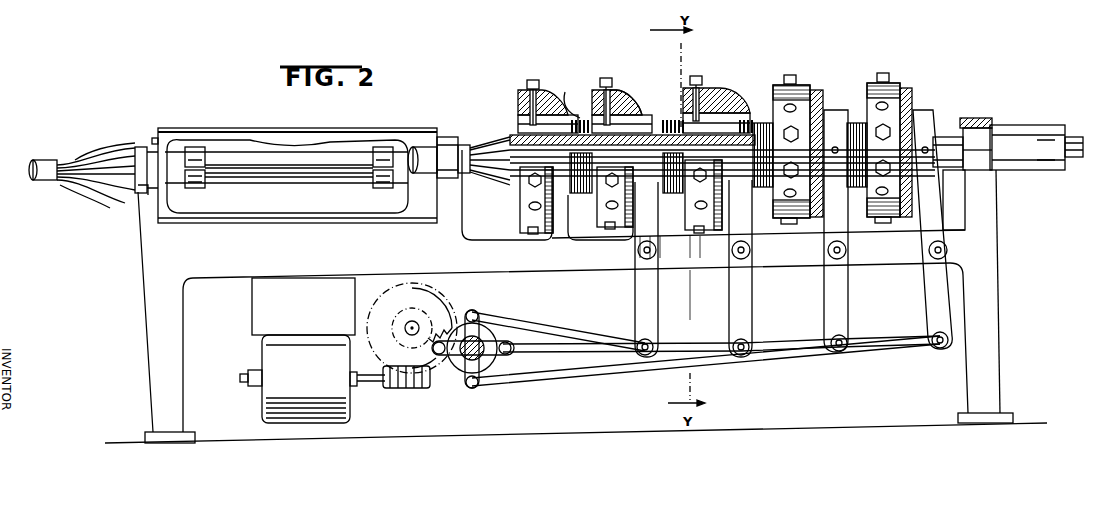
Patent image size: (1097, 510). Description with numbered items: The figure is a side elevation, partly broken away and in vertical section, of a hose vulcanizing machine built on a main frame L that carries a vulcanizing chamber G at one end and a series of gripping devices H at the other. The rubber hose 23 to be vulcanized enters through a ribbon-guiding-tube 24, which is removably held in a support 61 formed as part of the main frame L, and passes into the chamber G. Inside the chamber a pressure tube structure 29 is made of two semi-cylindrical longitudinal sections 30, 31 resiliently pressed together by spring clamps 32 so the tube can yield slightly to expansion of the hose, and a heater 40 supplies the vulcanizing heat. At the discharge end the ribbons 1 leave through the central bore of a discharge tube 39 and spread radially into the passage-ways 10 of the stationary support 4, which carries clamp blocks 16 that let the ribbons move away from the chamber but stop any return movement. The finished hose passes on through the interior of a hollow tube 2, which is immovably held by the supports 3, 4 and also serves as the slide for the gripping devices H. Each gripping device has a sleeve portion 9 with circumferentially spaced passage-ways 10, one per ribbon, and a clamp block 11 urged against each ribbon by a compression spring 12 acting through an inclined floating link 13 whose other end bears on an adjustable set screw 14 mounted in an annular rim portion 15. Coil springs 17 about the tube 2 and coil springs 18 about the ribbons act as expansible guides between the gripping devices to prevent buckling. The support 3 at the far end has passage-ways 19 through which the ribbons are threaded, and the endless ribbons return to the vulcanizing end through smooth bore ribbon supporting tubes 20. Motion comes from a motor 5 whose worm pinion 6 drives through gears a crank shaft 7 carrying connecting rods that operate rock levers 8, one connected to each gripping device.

The ribbons 1 is at (82, 200).
The hollow tube 2 is at (505, 140).
The stationary support 3 is at (985, 186).
The stationary support 4 is at (621, 196).
The motor 5 is at (260, 408).
The worm pinion 6 is at (406, 388).
The crank shaft 7 is at (463, 358).
The rock levers 8 is at (635, 302).
The sleeve portion 9 is at (652, 134).
The passage-ways 10 is at (660, 115).
The clamp block 11 is at (592, 118).
The compression spring 12 is at (640, 100).
The inclined floating link 13 is at (541, 100).
The adjustable set screw 14 is at (531, 80).
The annular rim portion 15 is at (618, 90).
The clamp blocks 16 is at (518, 110).
The coil spring 17 is at (687, 82).
The coil spring 18 is at (666, 120).
The passage-ways 19 is at (992, 120).
The ribbon supporting tubes 20 is at (424, 147).
The rubber hose 23 is at (50, 160).
The ribbon-guiding-tube 24 is at (127, 150).
The pressure tube structure 29 is at (275, 167).
The semi-cylindrical longitudinal section 30 is at (255, 150).
The semi-cylindrical longitudinal section 31 is at (277, 183).
The spring clamps 32 is at (194, 147).
The discharge tube 39 is at (465, 143).
The heater 40 is at (205, 206).
The support 61 is at (143, 194).
The vulcanizing chamber G is at (320, 133).
The gripping devices H is at (628, 90).
The main frame L is at (297, 236).